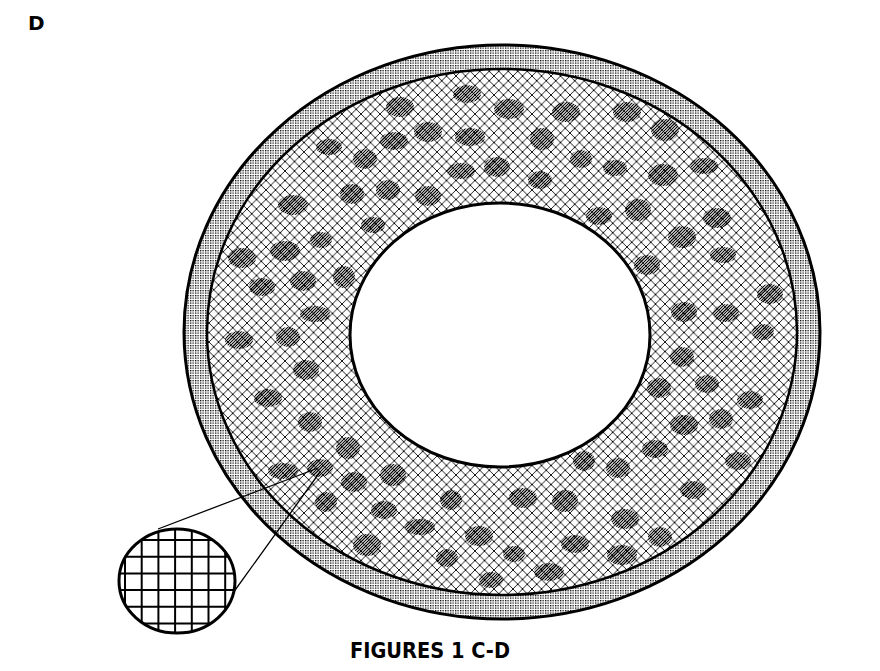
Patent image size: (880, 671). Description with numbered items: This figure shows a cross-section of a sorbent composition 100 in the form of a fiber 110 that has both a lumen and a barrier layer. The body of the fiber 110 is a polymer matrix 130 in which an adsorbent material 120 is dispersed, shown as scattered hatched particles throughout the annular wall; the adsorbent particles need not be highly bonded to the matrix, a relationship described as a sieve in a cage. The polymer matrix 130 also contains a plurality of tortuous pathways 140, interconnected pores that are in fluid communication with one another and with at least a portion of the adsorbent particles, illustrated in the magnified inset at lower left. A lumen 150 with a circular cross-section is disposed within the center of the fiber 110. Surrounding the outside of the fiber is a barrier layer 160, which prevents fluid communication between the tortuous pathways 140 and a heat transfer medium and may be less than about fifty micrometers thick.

The sorbent composition 100 is at (176, 140).
The fiber 110 is at (747, 147).
The adsorbent material 120 is at (262, 287).
The polymer matrix 130 is at (140, 565).
The tortuous pathways 140 is at (150, 597).
The lumen 150 is at (502, 335).
The barrier layer 160 is at (196, 368).